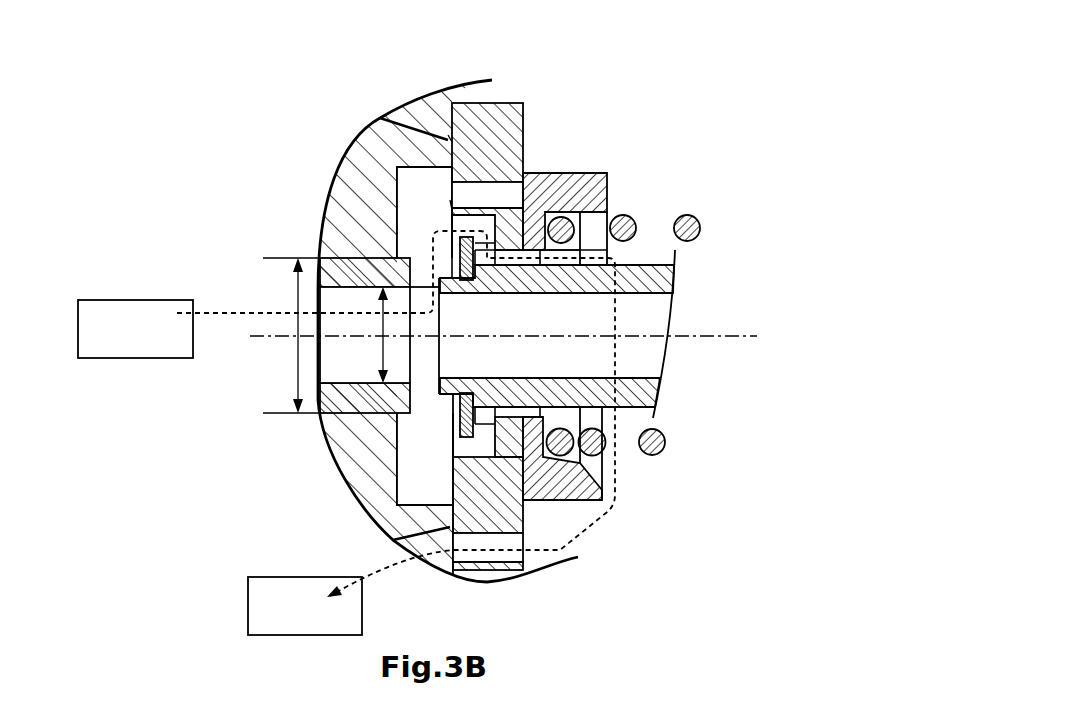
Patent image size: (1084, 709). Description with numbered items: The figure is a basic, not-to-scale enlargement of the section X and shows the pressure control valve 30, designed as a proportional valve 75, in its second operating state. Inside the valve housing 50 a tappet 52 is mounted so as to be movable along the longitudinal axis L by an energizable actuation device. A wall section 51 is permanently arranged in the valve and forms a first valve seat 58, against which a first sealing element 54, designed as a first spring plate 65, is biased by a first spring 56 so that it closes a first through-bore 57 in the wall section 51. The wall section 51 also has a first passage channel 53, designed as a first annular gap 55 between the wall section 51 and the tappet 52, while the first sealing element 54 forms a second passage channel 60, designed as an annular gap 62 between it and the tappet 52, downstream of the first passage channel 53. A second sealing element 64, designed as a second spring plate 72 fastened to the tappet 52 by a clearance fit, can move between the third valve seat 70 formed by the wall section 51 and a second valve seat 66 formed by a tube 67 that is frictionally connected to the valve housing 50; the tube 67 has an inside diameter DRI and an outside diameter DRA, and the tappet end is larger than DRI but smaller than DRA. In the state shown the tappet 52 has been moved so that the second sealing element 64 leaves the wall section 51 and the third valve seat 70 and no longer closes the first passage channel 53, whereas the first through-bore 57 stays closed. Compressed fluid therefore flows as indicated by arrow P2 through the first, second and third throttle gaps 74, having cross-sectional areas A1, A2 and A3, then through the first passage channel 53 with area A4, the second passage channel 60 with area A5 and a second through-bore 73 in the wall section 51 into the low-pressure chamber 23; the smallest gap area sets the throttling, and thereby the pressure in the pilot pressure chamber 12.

The pilot pressure chamber 12 is at (124, 300).
The low-pressure chamber 23 is at (248, 602).
The pressure control valve 30 is at (448, 317).
The proportional valve 75 is at (448, 317).
The valve housing 50 is at (347, 183).
The wall section 51 is at (470, 170).
The tappet 52 is at (622, 395).
The first passage channel 53 is at (530, 510).
The first sealing element 54 is at (593, 500).
The first annular gap 55 is at (510, 420).
The first spring 56 is at (686, 215).
The first through-bore 57 is at (480, 195).
The first valve seat 58 is at (602, 497).
The second passage channel 60 is at (620, 334).
The annular gap 62 is at (613, 273).
The second sealing element 64 is at (368, 412).
The first spring plate 65 is at (580, 500).
The second valve seat 66 is at (412, 285).
The tube 67 is at (332, 403).
The third valve seat 70 is at (500, 240).
The second spring plate 72 is at (450, 410).
The second through-bore 73 is at (487, 553).
The throttle gap 74 is at (346, 130).
The first cross-sectional area A1 is at (453, 218).
The second cross-sectional area A2 is at (450, 205).
The third cross-sectional area A3 is at (448, 140).
The cross-sectional area of the first passage channel A4 is at (527, 172).
The cross-sectional area of the second passage channel A5 is at (552, 252).
The longitudinal axis L is at (745, 338).
The arrow P2 is at (410, 563).
The section X is at (242, 500).
The outside diameter DRA is at (288, 335).
The inside diameter DRI is at (364, 335).